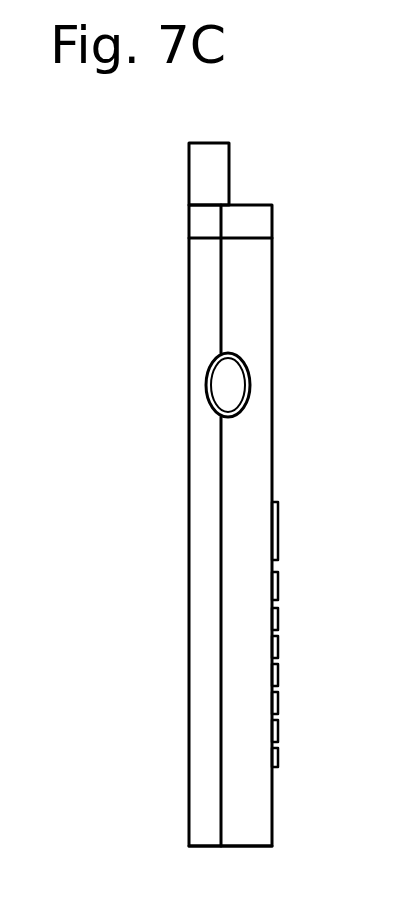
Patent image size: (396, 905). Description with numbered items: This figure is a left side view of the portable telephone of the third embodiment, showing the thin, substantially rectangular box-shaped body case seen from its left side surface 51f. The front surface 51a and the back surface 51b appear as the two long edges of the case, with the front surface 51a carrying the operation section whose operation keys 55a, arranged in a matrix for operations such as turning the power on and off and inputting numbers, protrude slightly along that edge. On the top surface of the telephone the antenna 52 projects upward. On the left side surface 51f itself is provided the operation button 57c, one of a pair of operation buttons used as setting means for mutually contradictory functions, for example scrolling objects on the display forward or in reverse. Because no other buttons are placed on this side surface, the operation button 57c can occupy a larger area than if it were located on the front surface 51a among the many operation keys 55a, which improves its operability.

The front surface 51a is at (272, 337).
The back surface 51b is at (189, 300).
The left side surface 51f is at (250, 813).
The antenna 52 is at (229, 172).
The operation keys 55a is at (278, 511).
The operation button 57c is at (206, 383).